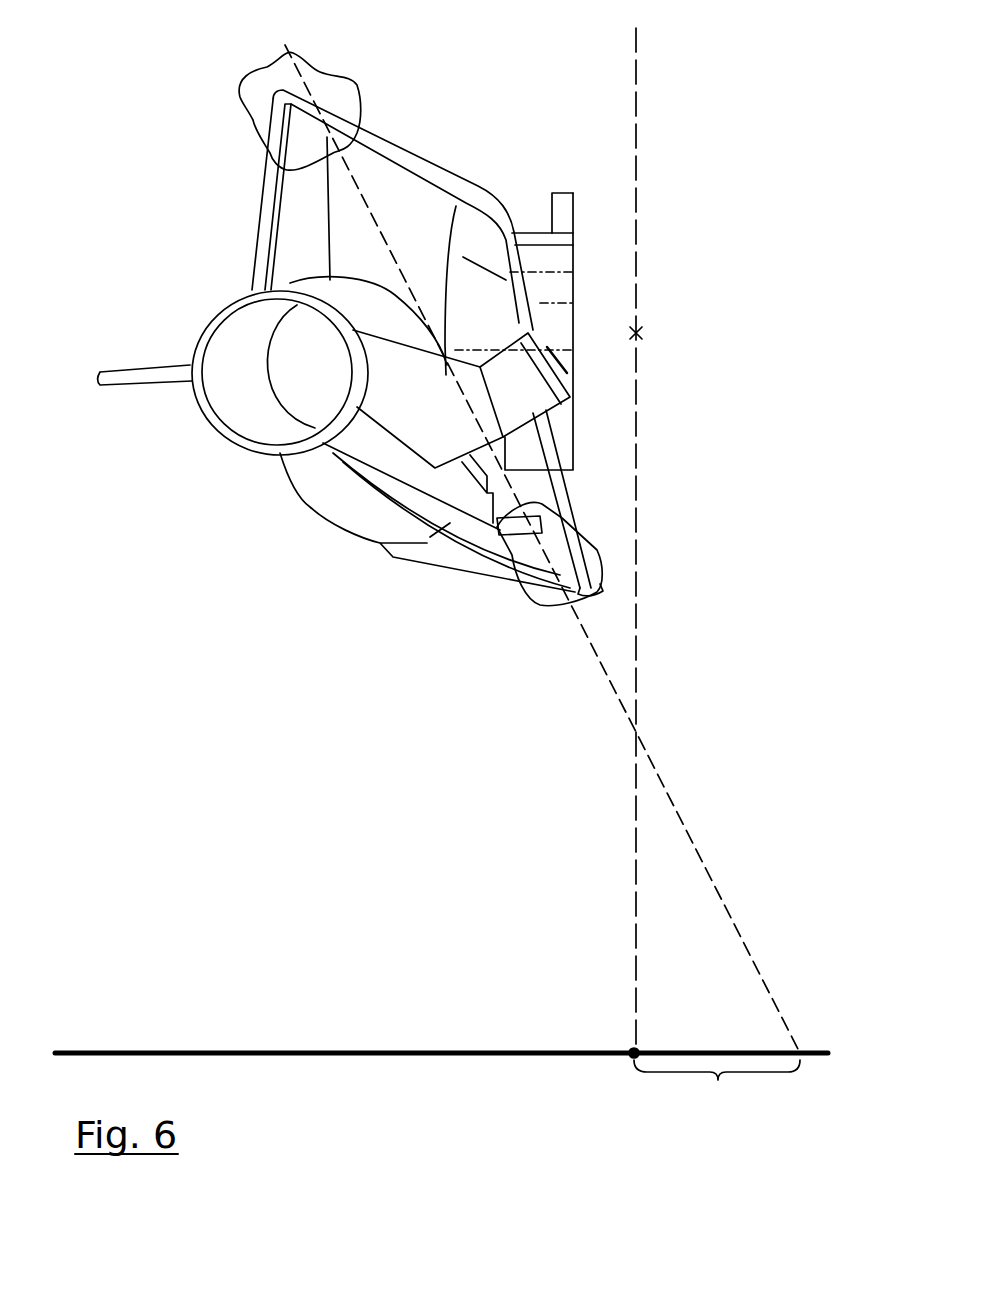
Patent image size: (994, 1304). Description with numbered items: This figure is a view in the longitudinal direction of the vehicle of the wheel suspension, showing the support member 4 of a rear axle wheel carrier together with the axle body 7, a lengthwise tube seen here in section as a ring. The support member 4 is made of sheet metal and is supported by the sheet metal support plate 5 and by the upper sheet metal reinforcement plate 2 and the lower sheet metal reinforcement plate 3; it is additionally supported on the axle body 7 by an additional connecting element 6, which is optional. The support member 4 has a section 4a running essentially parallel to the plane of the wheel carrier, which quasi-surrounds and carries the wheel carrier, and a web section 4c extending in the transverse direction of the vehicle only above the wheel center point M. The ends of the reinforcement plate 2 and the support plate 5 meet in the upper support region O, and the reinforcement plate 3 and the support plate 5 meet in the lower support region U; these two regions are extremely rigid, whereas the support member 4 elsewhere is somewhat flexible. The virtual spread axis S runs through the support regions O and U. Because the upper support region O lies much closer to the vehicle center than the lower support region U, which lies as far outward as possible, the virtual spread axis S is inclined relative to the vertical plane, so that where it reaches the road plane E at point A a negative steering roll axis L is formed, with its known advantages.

The upper sheet metal reinforcement plate 2 is at (307, 220).
The lower sheet metal reinforcement plate 3 is at (403, 556).
The support member 4 is at (427, 338).
The web section 4c is at (417, 157).
The section of the support member parallel to the wheel carrier plane 4a is at (573, 507).
The sheet metal support plate 5 is at (423, 247).
The additional connecting element 6 is at (548, 407).
The axle body 7 is at (340, 298).
The wheel center point M is at (661, 540).
The virtual spread axis S is at (612, 690).
The ground plane E is at (441, 1028).
The contact point A is at (633, 1052).
The negative steering roll axis L is at (717, 1096).
The upper support region O is at (357, 120).
The lower support region U is at (531, 604).